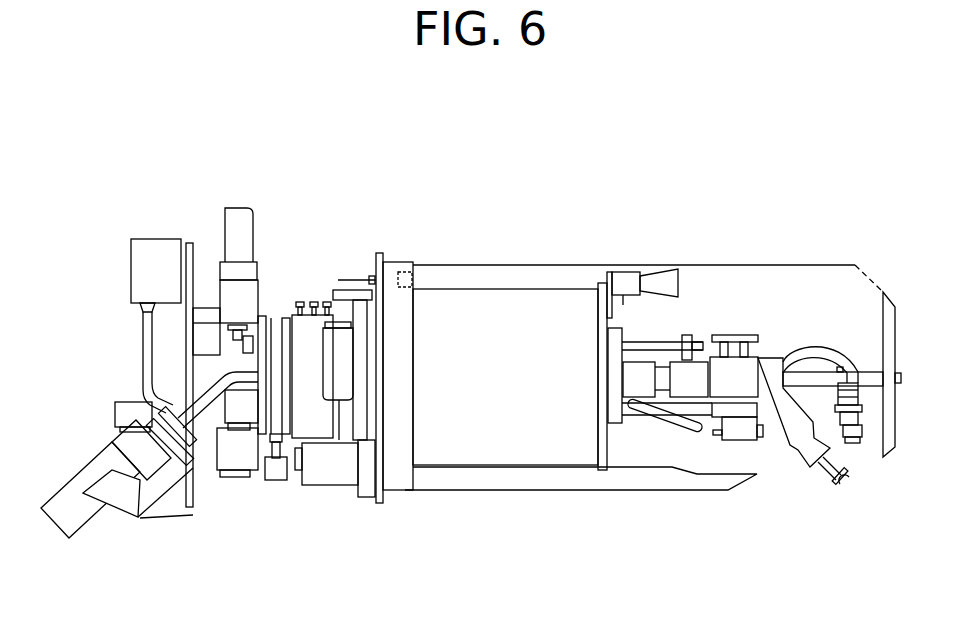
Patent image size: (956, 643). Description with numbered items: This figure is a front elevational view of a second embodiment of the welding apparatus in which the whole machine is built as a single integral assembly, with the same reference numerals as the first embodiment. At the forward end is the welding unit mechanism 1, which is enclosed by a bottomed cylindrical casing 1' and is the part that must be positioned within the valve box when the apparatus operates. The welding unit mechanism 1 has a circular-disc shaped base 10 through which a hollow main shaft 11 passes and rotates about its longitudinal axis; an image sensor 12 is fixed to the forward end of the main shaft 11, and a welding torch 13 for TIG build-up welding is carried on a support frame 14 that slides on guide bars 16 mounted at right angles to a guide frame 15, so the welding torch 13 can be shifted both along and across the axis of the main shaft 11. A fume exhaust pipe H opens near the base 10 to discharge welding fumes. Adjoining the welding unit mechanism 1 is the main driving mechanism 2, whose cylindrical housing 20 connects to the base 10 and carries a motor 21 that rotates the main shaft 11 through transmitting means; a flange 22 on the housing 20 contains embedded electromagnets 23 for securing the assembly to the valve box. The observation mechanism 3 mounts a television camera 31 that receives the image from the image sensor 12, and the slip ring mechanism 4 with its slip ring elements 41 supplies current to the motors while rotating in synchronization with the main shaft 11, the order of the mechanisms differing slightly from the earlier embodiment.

The welding unit mechanism 1 is at (670, 327).
The casing 1' is at (904, 350).
The main driving mechanism 2 is at (320, 492).
The observation mechanism 3 is at (140, 527).
The slip ring mechanism 4 is at (518, 262).
The base 10 is at (617, 425).
The main shaft 11 is at (641, 372).
The image sensor 12 is at (863, 445).
The welding torch 13 is at (845, 487).
The support frame 14 is at (750, 440).
The guide frame 15 is at (755, 367).
The guide bars 16 is at (732, 415).
The housing 20 is at (508, 468).
The motor 21 is at (335, 343).
The flange 22 is at (393, 265).
The electromagnets 23 is at (404, 272).
The television camera 31 is at (70, 490).
The slip ring elements 41 is at (450, 448).
The fume exhaust pipe H is at (652, 272).